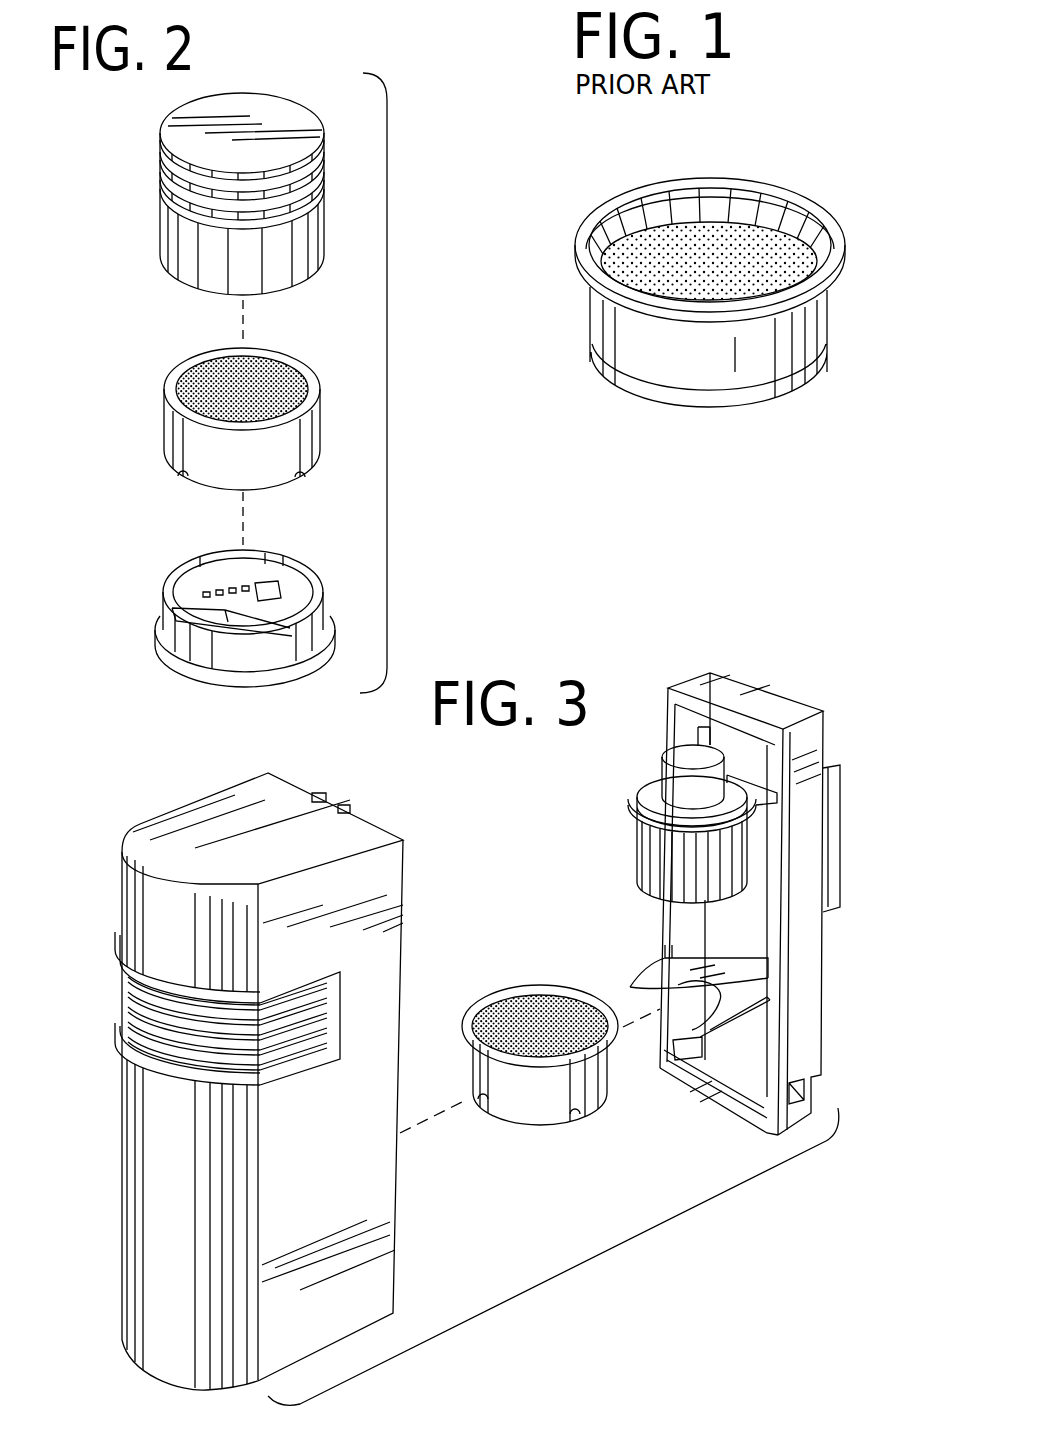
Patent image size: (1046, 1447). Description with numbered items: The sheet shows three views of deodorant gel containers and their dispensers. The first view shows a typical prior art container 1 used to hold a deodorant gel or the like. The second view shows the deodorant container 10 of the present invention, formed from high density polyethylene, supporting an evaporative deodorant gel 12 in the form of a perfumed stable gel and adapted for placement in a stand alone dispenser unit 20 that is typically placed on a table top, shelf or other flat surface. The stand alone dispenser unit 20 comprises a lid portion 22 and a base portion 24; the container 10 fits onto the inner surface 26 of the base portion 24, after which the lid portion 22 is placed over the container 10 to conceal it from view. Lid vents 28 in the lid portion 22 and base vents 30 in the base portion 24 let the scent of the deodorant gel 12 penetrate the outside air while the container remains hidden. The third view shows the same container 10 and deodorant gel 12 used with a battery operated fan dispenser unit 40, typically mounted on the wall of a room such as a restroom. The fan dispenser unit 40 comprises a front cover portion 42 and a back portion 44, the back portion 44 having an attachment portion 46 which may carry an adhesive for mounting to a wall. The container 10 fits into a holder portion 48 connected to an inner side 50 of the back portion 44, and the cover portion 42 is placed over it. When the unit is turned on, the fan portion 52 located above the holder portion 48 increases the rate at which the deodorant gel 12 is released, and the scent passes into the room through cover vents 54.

In FIG. 1, the prior art container 1 is at (790, 190).
In FIG. 2, the deodorant container 10 is at (150, 443).
In FIG. 3, the deodorant container 10 is at (457, 1000).
In FIG. 2, the deodorant gel 12 is at (212, 365).
In FIG. 3, the deodorant gel 12 is at (553, 1012).
In FIG. 2, the stand alone dispenser unit 20 is at (88, 240).
In FIG. 2, the lid portion 22 is at (162, 237).
In FIG. 2, the base portion 24 is at (160, 650).
In FIG. 2, the inner surface 26 is at (196, 604).
In FIG. 2, the lid vents 28 is at (160, 168).
In FIG. 2, the base vents 30 is at (210, 588).
In FIG. 3, the battery operated fan dispenser unit 40 is at (790, 682).
In FIG. 3, the front cover portion 42 is at (125, 1176).
In FIG. 3, the back portion 44 is at (808, 980).
In FIG. 3, the attachment portion 46 is at (841, 817).
In FIG. 3, the holder portion 48 is at (748, 1015).
In FIG. 3, the inner side 50 is at (766, 1046).
In FIG. 3, the fan portion 52 is at (637, 852).
In FIG. 3, the cover vents 54 is at (118, 968).